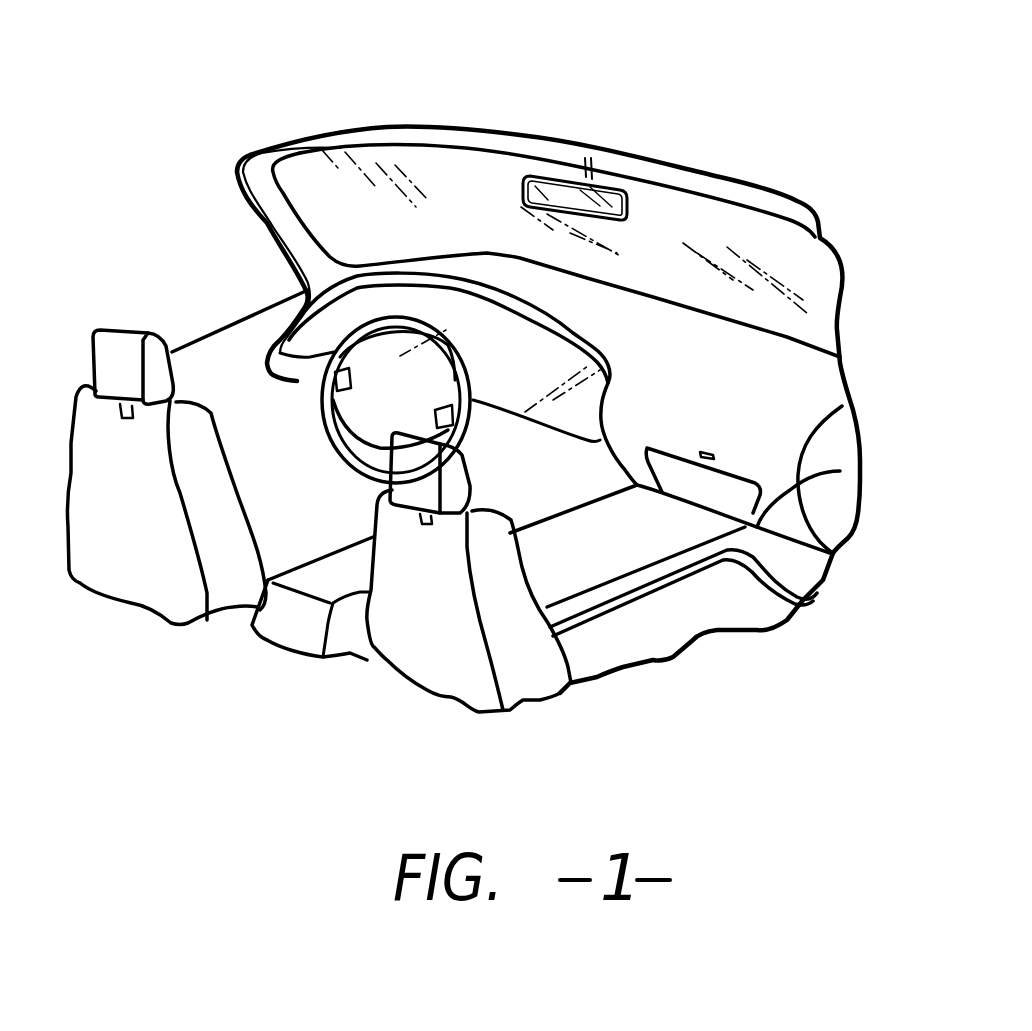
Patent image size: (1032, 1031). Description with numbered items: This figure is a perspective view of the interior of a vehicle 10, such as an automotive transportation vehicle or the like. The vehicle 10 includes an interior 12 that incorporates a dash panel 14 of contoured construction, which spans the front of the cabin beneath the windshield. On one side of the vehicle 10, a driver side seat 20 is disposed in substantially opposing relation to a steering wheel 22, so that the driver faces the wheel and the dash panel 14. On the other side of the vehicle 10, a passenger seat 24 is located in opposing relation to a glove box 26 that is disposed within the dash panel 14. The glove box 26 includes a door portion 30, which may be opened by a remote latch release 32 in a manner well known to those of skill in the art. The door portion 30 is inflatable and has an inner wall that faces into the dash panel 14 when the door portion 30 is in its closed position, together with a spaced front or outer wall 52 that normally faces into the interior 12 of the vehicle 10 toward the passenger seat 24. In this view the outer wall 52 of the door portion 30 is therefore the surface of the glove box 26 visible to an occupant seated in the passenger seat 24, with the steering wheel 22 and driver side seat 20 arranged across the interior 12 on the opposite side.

The vehicle 10 is at (630, 100).
The interior 12 is at (660, 647).
The dash panel 14 is at (663, 287).
The driver side seat 20 is at (136, 333).
The steering wheel 22 is at (350, 345).
The passenger seat 24 is at (513, 662).
The glove box 26 is at (756, 461).
The door portion 30 is at (840, 471).
The remote latch release 32 is at (707, 450).
The outer wall 52 is at (683, 499).